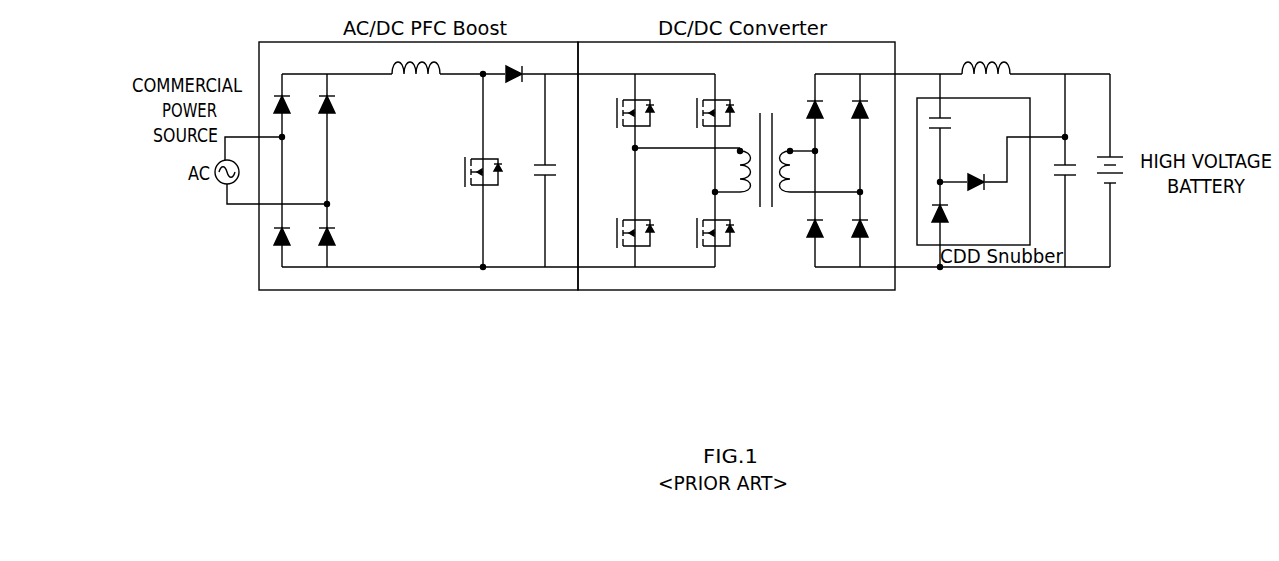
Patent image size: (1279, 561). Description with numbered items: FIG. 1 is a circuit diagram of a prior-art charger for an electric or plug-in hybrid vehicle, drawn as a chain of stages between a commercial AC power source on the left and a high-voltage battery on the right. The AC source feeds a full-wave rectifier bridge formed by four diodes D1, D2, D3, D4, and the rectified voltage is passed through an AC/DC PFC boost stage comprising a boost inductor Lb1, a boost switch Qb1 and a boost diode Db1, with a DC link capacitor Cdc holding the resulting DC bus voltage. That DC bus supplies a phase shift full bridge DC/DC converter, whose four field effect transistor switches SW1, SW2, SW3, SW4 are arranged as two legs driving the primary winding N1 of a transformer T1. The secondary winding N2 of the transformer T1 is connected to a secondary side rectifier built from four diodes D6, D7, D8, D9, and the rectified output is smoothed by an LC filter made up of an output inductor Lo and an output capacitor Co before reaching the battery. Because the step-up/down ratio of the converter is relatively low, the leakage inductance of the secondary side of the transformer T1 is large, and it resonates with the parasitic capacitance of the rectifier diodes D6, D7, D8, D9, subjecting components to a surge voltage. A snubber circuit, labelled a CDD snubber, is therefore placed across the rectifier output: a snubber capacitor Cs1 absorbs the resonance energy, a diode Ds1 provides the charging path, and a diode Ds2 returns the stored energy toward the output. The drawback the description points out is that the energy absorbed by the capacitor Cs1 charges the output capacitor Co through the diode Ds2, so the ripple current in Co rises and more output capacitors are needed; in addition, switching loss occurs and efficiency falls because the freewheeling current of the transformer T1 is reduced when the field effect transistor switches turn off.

The rectifier diode D1 is at (294, 105).
The rectifier diode D2 is at (339, 139).
The rectifier diode D3 is at (294, 202).
The rectifier diode D4 is at (339, 235).
The boost inductor Lb1 is at (416, 82).
The boost diode Db1 is at (513, 90).
The boost switch Qb1 is at (464, 170).
The DC link capacitor Cdc is at (531, 170).
The switch SW1 is at (617, 111).
The switch SW2 is at (617, 207).
The switch SW3 is at (697, 133).
The switch SW4 is at (697, 229).
The transformer T1 is at (765, 155).
The primary winding N1 is at (742, 156).
The secondary winding N2 is at (788, 156).
The secondary side rectifier diode D6 is at (827, 112).
The secondary side rectifier diode D7 is at (827, 209).
The secondary side rectifier diode D8 is at (872, 133).
The secondary side rectifier diode D9 is at (872, 229).
The output inductor Lo is at (986, 80).
The capacitor of the snubber circuit Cs1 is at (958, 128).
The snubber diode Ds1 is at (957, 224).
The diode Ds2 is at (1002, 163).
The output capacitor Co is at (1056, 170).